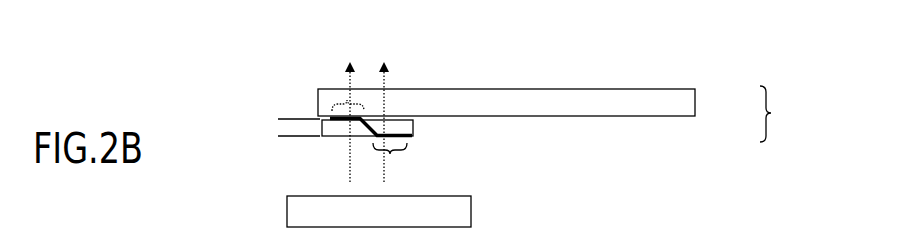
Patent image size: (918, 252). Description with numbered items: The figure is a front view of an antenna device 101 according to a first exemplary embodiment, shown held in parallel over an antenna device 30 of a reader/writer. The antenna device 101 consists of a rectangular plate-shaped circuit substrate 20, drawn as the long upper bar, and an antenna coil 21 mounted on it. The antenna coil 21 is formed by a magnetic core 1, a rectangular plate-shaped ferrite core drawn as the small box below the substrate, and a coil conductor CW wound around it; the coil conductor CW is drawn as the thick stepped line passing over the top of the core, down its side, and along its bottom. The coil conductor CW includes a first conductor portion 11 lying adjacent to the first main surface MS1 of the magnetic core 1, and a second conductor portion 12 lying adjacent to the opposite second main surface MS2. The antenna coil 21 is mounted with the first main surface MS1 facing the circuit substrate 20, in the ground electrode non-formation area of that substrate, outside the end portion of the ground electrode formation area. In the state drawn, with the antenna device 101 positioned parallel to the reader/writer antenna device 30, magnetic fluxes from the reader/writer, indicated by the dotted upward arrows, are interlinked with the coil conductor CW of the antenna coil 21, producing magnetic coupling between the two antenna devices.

The magnetic core 1 is at (405, 126).
The first conductor portion 11 is at (347, 103).
The second conductor portion 12 is at (390, 162).
The circuit substrate 20 is at (680, 104).
The antenna coil 21 is at (422, 139).
The antenna device of a reader/writer 30 is at (462, 213).
The antenna device 101 is at (781, 114).
The first main surface MS1 is at (290, 119).
The second main surface MS2 is at (290, 137).
The coil conductor CW is at (364, 137).